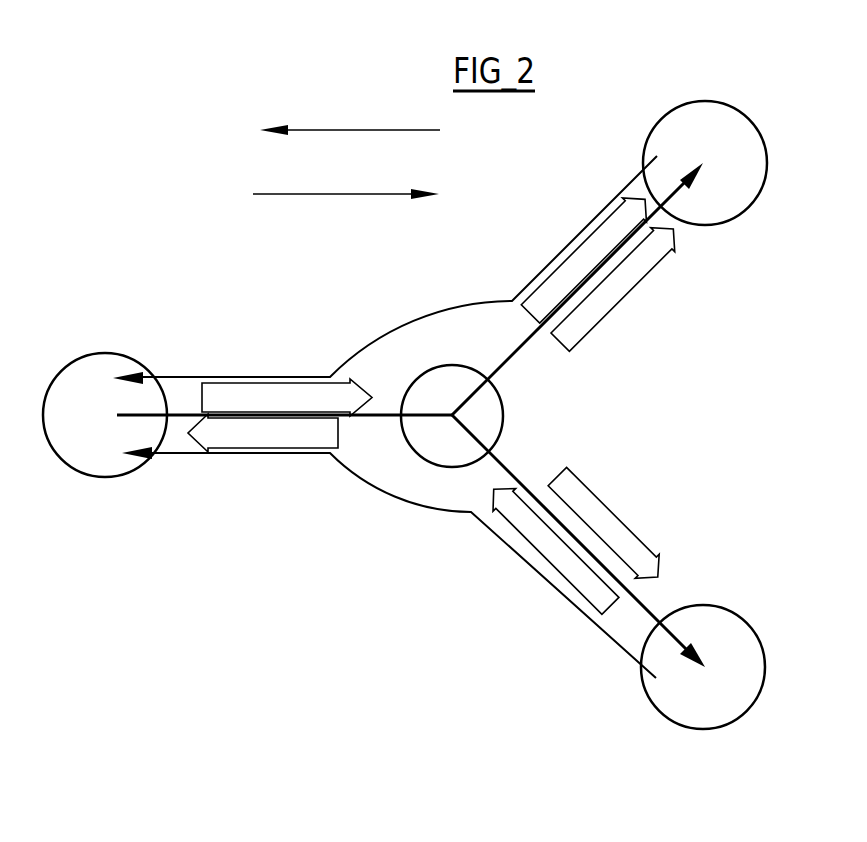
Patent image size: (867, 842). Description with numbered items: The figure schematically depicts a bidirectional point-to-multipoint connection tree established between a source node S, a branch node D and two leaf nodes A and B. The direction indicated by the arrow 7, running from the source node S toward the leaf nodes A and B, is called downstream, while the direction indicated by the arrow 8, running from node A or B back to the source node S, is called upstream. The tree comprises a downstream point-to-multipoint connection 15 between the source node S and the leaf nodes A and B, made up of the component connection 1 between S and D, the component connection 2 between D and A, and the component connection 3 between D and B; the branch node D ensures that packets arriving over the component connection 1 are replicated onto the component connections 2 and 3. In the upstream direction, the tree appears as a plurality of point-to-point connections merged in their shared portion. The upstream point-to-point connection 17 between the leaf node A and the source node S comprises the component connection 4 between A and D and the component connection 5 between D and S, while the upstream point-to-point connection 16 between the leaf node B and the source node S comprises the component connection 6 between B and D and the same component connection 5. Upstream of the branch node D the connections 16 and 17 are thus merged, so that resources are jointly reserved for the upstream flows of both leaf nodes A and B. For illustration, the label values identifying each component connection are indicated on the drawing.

The component connection 1 is at (296, 381).
The component connection 2 is at (582, 242).
The component connection 3 is at (609, 511).
The component connection 4 is at (636, 288).
The component connection 5 is at (271, 449).
The component connection 6 is at (548, 568).
The arrow 7 is at (340, 196).
The arrow 8 is at (343, 128).
The downstream point-to-multipoint connection 15 is at (379, 424).
The upstream point-to-point connection 16 is at (439, 488).
The upstream point-to-point connection 17 is at (380, 366).
The source node S is at (96, 353).
The branch node D is at (441, 363).
The leaf node A is at (723, 104).
The leaf node B is at (662, 719).